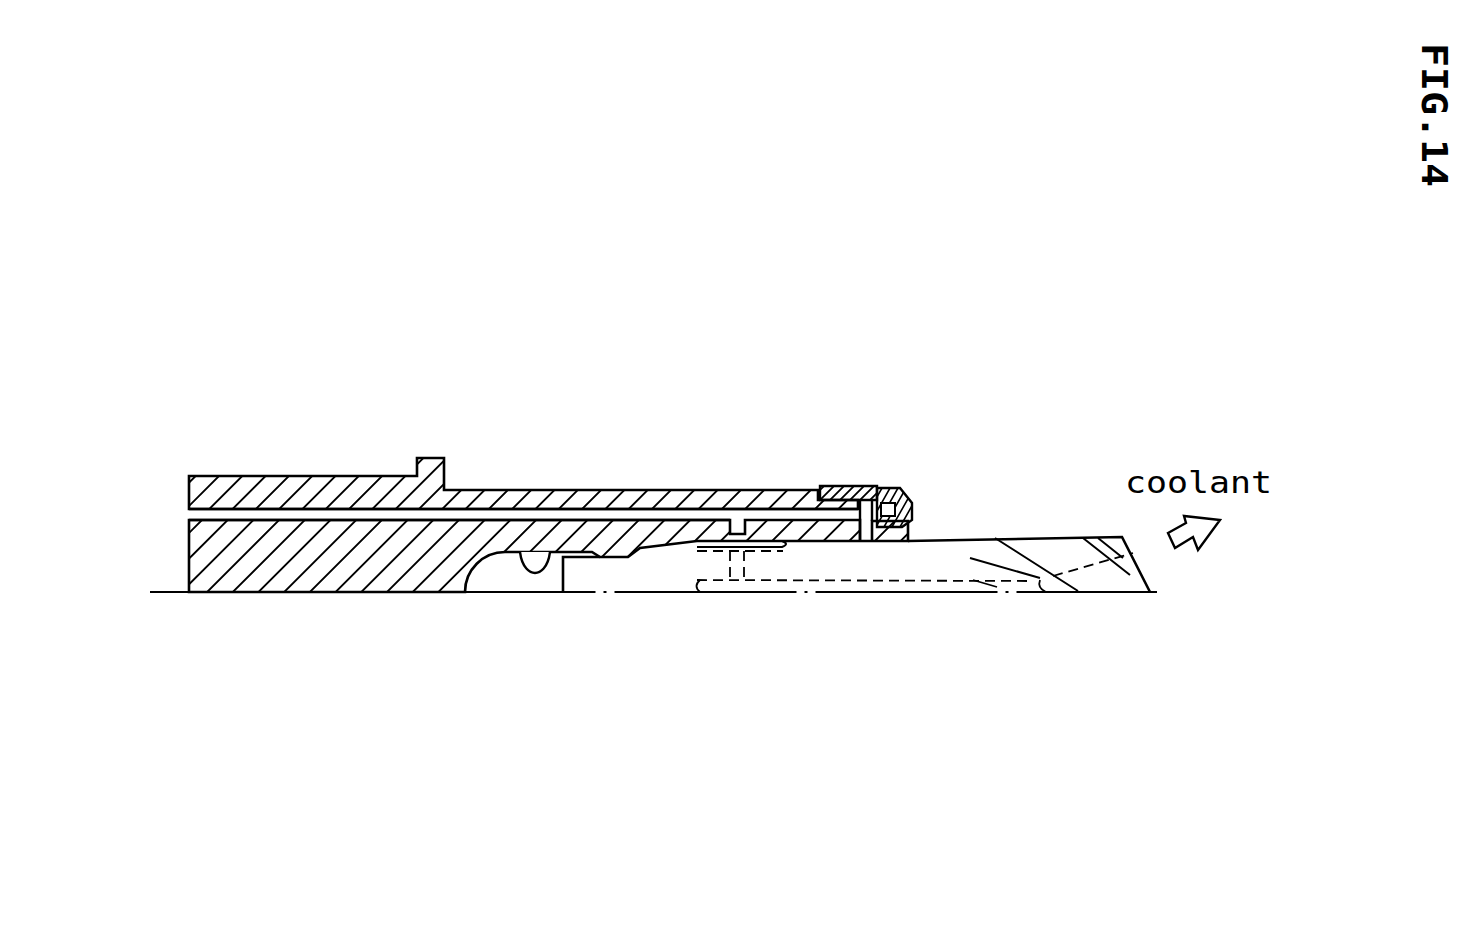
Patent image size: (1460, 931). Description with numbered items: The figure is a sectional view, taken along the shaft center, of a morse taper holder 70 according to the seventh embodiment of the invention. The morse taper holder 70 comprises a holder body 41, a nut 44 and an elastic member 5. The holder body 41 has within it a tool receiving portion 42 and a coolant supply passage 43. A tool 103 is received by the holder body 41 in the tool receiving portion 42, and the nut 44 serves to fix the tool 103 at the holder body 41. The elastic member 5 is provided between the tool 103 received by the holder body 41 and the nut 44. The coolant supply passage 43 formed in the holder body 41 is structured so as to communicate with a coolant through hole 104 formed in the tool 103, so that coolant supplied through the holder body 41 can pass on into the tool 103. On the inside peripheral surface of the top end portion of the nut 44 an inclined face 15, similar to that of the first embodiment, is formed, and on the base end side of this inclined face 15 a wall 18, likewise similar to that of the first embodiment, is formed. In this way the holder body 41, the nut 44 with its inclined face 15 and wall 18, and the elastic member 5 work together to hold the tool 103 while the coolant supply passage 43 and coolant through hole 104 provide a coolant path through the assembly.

The morse taper holder 70 is at (329, 421).
The holder body 41 is at (395, 482).
The tool receiving portion 42 is at (544, 562).
The coolant supply passage 43 is at (693, 513).
The nut 44 is at (870, 488).
The wall 18 is at (880, 497).
The inclined face 15 is at (896, 492).
The elastic member 5 is at (910, 540).
The tool 103 is at (862, 572).
The coolant through hole 104 is at (763, 590).